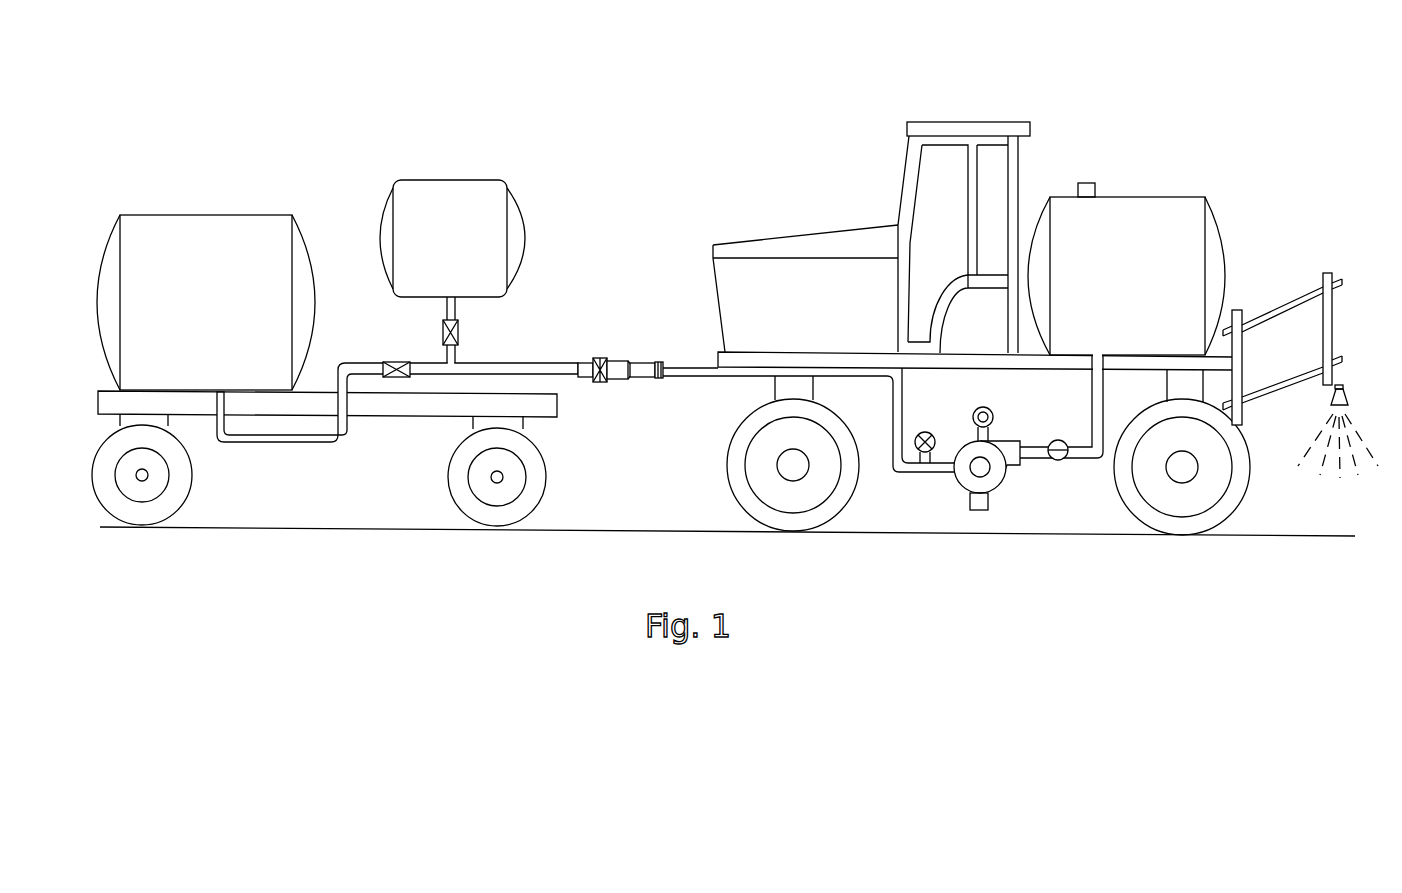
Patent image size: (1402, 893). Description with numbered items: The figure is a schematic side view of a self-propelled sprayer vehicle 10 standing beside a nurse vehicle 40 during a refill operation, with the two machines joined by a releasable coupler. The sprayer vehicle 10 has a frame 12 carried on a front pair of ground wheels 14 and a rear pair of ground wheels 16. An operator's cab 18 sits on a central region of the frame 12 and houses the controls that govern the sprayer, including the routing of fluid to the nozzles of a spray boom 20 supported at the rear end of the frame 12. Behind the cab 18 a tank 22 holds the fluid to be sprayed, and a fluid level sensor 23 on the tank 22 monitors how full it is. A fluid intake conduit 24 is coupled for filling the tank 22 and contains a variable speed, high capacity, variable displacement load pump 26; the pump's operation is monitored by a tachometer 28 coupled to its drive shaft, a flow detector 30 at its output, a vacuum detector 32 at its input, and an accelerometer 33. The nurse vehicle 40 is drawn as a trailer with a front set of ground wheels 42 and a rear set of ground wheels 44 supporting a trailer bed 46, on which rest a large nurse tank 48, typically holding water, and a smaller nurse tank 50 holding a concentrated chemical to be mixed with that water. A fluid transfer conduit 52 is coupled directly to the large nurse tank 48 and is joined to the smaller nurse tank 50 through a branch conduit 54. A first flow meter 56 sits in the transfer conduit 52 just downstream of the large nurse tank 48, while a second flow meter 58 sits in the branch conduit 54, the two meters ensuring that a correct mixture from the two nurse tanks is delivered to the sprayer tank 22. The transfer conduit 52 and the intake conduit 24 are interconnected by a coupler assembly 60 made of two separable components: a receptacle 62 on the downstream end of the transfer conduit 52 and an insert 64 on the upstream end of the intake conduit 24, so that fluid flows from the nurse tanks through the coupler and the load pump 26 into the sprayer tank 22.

The self-propelled sprayer vehicle 10 is at (1020, 285).
The frame 12 is at (1133, 355).
The front pair of ground wheels 14 is at (737, 483).
The rear pair of ground wheels 16 is at (1243, 498).
The operator's cab 18 is at (985, 122).
The spray boom 20 is at (1345, 376).
The tank 22 is at (1128, 196).
The fluid level sensor 23 is at (1085, 181).
The fluid intake conduit 24 is at (690, 378).
The load pump 26 is at (1000, 488).
The tachometer 28 is at (993, 410).
The flow detector 30 is at (1058, 461).
The vacuum detector 32 is at (928, 431).
The accelerometer 33 is at (966, 506).
The nurse vehicle 40 is at (327, 270).
The front set of ground wheels 42 is at (450, 480).
The rear set of ground wheels 44 is at (189, 488).
The trailer bed 46 is at (389, 416).
The large nurse tank 48 is at (213, 300).
The smaller nurse tank 50 is at (455, 241).
The fluid transfer conduit 52 is at (270, 443).
The branch conduit 54 is at (461, 308).
The first flow meter 56 is at (395, 361).
The second flow meter 58 is at (461, 336).
The coupler assembly 60 is at (614, 311).
The receptacle 62 is at (583, 357).
The insert 64 is at (650, 350).